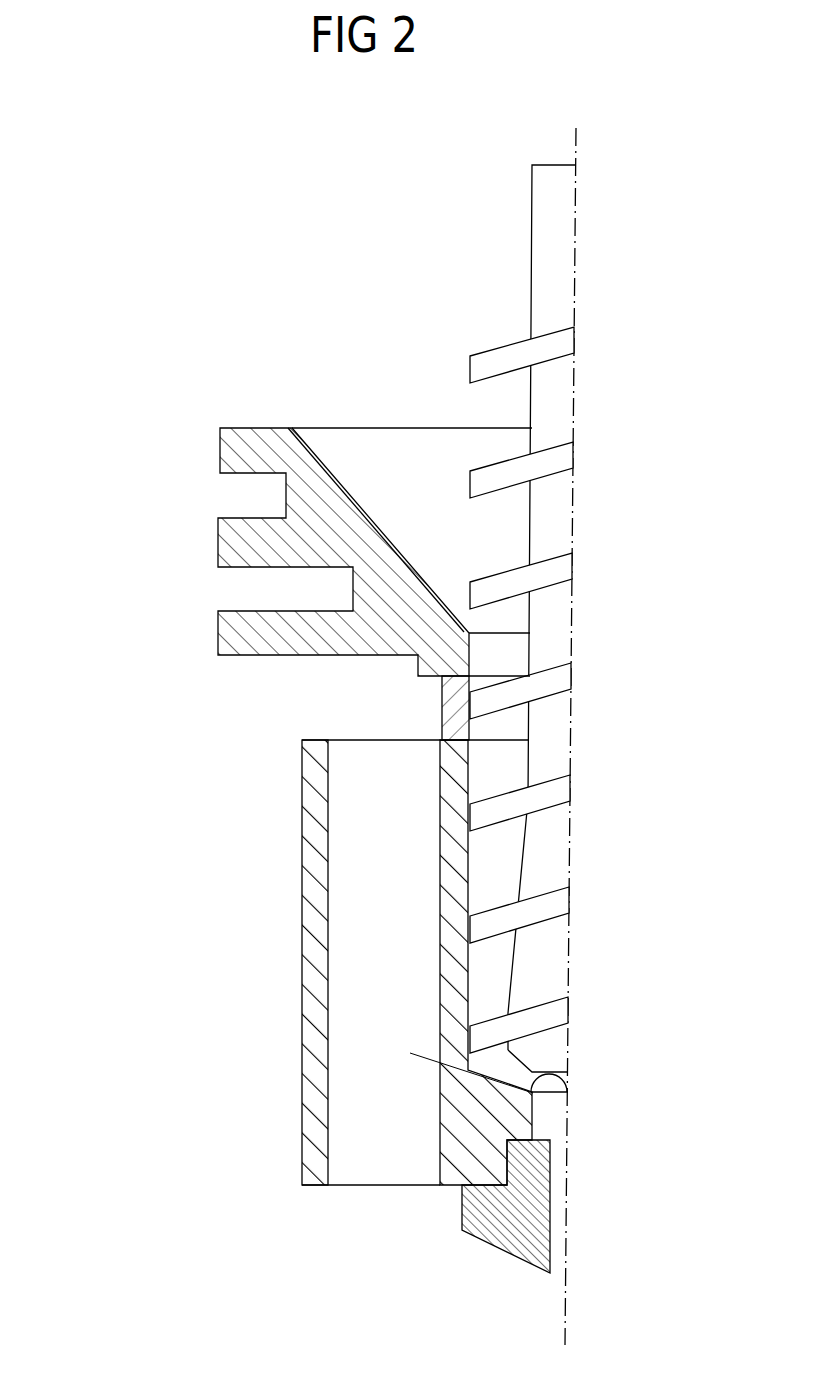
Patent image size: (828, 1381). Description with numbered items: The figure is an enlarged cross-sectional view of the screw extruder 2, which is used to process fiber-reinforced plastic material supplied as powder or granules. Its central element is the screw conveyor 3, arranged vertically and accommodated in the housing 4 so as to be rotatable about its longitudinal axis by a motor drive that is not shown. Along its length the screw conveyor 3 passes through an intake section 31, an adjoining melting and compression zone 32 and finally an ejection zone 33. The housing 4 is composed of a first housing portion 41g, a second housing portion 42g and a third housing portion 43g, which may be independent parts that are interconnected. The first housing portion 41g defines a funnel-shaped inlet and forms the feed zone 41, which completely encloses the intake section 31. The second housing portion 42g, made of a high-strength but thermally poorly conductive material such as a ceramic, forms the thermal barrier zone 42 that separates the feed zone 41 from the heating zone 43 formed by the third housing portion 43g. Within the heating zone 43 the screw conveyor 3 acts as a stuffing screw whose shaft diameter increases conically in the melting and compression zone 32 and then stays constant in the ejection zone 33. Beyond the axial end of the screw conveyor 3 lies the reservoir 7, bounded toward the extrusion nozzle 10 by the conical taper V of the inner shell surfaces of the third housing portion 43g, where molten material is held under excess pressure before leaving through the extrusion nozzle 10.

The screw extruder 2 is at (566, 105).
The screw conveyor 3 is at (496, 326).
The intake section 31 is at (618, 169).
The melting and compression zone 32 is at (611, 798).
The ejection zone 33 is at (609, 958).
The reservoir 7 is at (608, 1071).
The housing 4 is at (84, 391).
The feed zone 41 is at (171, 430).
The first housing portion 41g is at (247, 437).
The thermal barrier zone 42 is at (171, 670).
The second housing portion 42g is at (455, 712).
The heating zone 43 is at (165, 743).
The third housing portion 43g is at (320, 987).
The extrusion nozzle 10 is at (165, 1186).
The conical taper V is at (497, 1087).